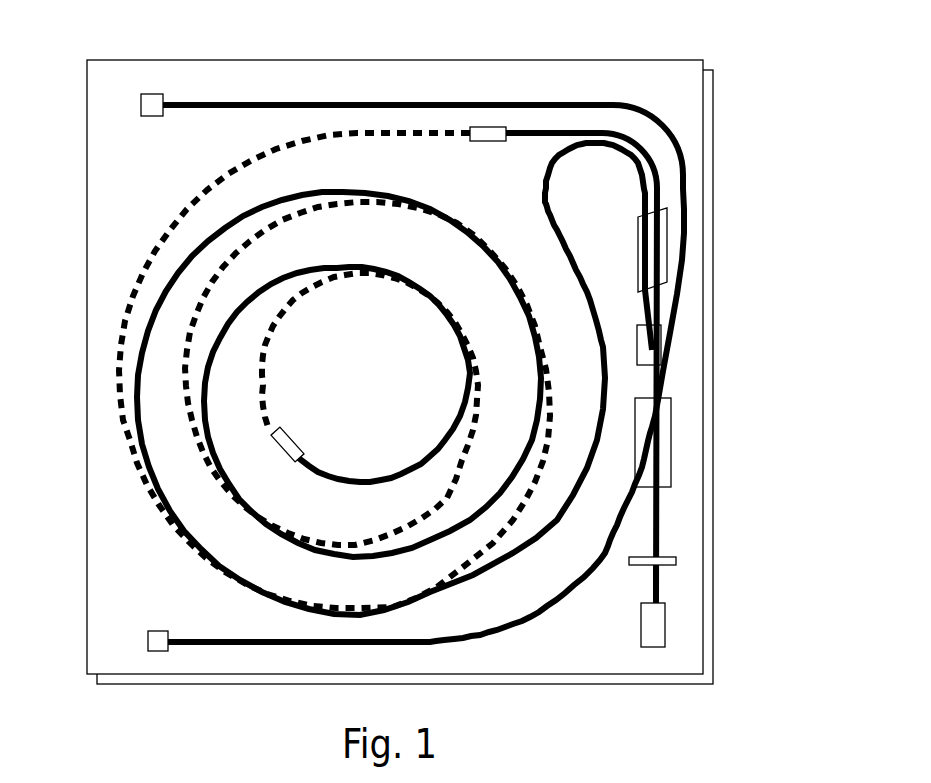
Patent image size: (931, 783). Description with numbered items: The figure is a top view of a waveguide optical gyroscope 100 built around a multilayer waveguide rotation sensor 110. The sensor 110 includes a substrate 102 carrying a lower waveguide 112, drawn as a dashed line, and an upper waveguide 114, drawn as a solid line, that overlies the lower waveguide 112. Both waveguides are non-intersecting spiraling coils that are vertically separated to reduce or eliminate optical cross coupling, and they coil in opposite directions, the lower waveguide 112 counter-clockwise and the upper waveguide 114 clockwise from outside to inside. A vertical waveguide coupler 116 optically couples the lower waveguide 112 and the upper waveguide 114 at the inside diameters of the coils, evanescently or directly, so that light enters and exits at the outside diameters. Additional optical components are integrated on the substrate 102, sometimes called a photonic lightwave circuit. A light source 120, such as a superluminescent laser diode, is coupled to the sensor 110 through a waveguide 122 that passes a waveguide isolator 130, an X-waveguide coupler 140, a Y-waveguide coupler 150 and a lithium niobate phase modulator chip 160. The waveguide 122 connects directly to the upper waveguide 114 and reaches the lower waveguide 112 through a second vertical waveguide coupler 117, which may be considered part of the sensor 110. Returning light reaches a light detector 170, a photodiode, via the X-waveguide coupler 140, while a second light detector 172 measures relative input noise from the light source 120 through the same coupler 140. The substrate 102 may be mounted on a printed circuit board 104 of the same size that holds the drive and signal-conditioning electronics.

The waveguide optical gyroscope 100 is at (693, 32).
The substrate 102 is at (703, 130).
The printed circuit board 104 is at (713, 183).
The multilayer waveguide rotation sensor 110 is at (138, 247).
The lower waveguide 112 is at (200, 192).
The upper waveguide 114 is at (568, 257).
The vertical waveguide coupler 116 is at (292, 442).
The second vertical waveguide coupler 117 is at (493, 130).
The light source 120 is at (665, 638).
The waveguide 122 is at (657, 593).
The waveguide isolator 130 is at (677, 563).
The X-waveguide coupler 140 is at (672, 445).
The Y-waveguide coupler 150 is at (661, 342).
The LN phase modulator chip 160 is at (667, 272).
The light detector 170 is at (148, 651).
The second light detector 172 is at (148, 94).